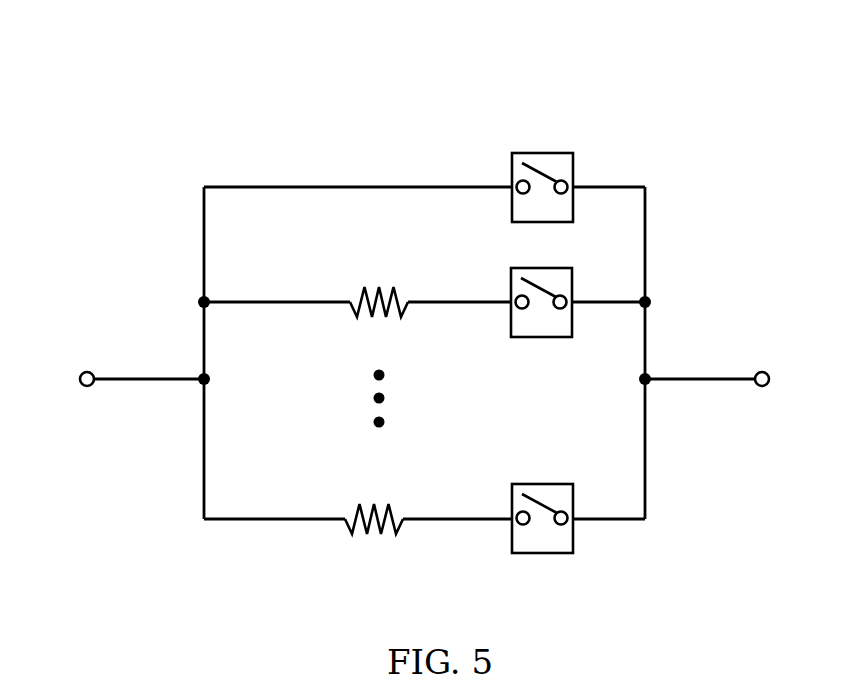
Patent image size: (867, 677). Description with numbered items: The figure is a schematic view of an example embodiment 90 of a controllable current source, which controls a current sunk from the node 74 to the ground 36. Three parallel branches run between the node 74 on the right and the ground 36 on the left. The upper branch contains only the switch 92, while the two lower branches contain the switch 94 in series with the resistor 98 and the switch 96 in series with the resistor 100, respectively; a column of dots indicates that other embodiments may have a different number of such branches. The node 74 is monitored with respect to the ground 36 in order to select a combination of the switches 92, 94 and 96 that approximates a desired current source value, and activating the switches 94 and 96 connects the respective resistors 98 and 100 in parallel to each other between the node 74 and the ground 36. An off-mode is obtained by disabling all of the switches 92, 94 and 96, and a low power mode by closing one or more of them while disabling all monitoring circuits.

The example embodiment of the controllable current source 90 is at (480, 60).
The ground 36 is at (82, 373).
The node 74 is at (766, 373).
The switch 92 is at (552, 218).
The switch 94 is at (551, 333).
The switch 96 is at (552, 549).
The resistor 98 is at (377, 290).
The resistor 100 is at (372, 507).